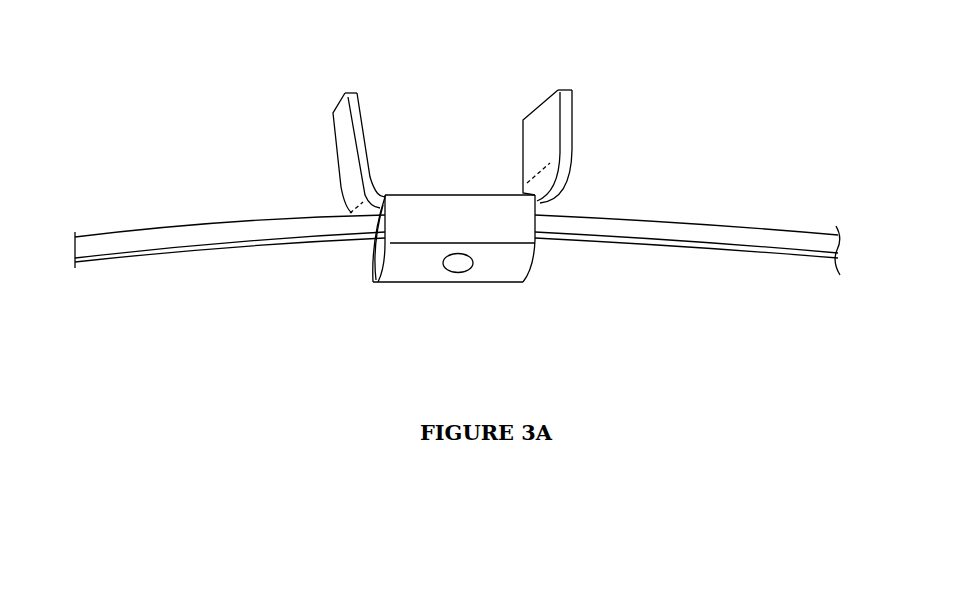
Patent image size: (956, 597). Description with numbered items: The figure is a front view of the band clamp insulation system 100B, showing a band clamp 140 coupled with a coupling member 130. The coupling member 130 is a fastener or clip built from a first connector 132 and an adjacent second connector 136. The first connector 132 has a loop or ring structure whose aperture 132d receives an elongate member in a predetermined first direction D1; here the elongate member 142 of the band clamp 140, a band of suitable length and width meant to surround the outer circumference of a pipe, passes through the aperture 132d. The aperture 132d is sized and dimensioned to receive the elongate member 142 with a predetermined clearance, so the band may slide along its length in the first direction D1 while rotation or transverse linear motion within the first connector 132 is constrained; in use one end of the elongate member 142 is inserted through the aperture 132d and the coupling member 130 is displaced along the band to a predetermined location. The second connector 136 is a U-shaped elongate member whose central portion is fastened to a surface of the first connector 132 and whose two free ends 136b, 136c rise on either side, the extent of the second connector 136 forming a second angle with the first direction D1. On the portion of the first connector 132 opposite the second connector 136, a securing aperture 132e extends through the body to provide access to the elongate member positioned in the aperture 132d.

The band clamp insulation system 100B is at (764, 96).
The coupling member 130 is at (433, 265).
The first connector 132 is at (497, 265).
The aperture 132d is at (372, 252).
The securing aperture 132e is at (450, 272).
The second connector 136 is at (420, 122).
The free end 136b is at (347, 142).
The free end 136c is at (552, 120).
The band clamp 140 is at (768, 223).
The elongate member 142 is at (125, 230).
The predetermined first direction D1 is at (690, 203).